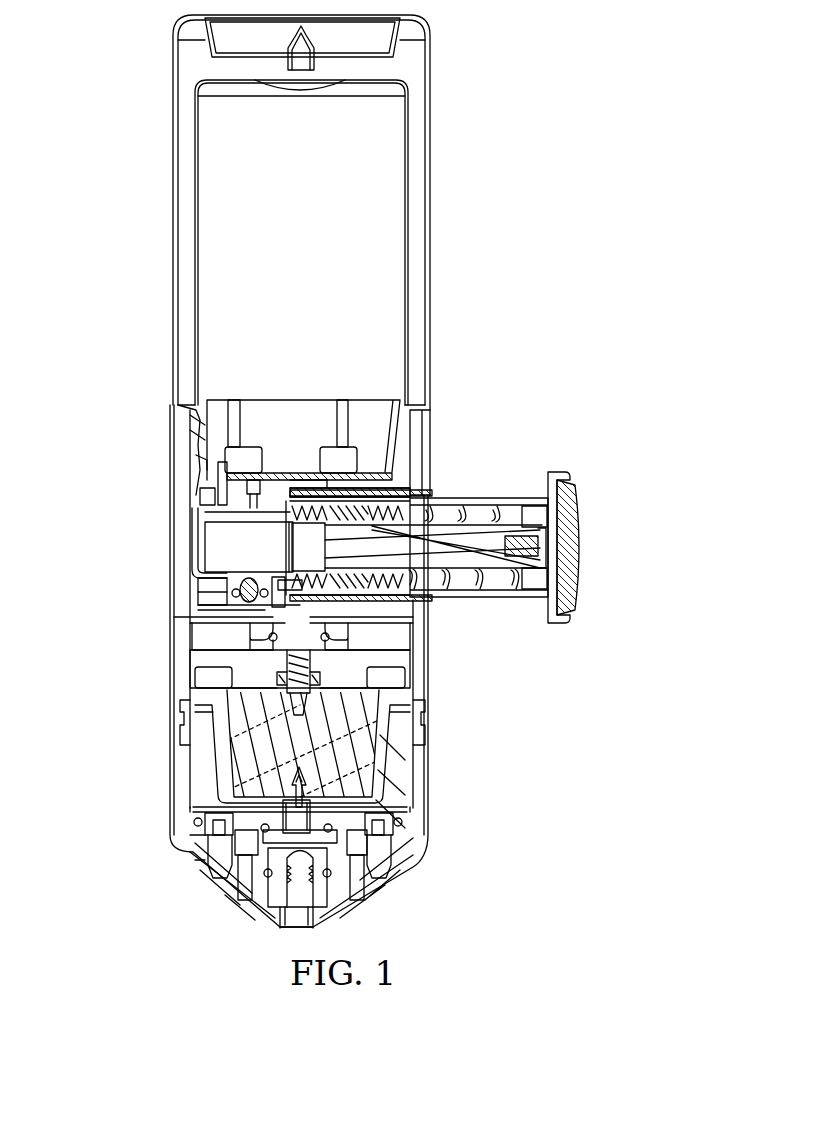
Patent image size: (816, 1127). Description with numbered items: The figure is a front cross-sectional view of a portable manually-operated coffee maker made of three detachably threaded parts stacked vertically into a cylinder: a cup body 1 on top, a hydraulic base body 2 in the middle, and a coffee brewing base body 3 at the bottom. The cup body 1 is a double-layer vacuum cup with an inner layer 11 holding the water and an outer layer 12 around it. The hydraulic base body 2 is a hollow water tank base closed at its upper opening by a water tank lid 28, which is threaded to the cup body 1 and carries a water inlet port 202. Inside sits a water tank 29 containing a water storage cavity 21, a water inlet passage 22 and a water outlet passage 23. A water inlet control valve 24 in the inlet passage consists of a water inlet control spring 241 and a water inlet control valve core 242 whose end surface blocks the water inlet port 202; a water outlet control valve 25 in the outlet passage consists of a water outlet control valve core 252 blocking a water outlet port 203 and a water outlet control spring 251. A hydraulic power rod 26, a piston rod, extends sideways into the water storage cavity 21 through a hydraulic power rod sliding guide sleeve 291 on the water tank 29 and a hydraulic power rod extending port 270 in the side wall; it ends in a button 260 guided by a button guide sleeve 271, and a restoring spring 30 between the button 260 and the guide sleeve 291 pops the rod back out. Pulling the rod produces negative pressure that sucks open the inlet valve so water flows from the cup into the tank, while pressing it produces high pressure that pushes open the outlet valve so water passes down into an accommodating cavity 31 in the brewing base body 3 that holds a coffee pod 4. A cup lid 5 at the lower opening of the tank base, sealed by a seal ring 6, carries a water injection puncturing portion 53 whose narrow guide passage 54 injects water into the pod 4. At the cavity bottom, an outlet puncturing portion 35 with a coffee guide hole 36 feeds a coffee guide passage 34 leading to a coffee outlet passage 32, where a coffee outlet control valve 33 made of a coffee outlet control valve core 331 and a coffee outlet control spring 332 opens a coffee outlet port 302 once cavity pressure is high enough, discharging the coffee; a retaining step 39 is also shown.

The cup body 1 is at (131, 274).
The hydraulic base body 2 is at (193, 490).
The coffee brewing base body 3 is at (177, 787).
The coffee pod 4 is at (405, 728).
The cup lid 5 is at (400, 656).
The seal ring 6 is at (222, 680).
The inner layer 11 is at (408, 232).
The outer layer 12 is at (432, 165).
The water storage cavity 21 is at (225, 548).
The water inlet passage 22 is at (228, 512).
The water outlet passage 23 is at (227, 607).
The water inlet control valve 24 is at (215, 522).
The water outlet control valve 25 is at (240, 620).
The hydraulic power rod 26 is at (510, 497).
The water tank lid 28 is at (175, 405).
The water tank 29 is at (205, 505).
The restoring spring 30 is at (541, 568).
The accommodating cavity 31 is at (400, 778).
The coffee outlet passage 32 is at (410, 875).
The coffee outlet control valve 33 is at (305, 918).
The coffee guide passage 34 is at (197, 822).
The outlet puncturing portion 35 is at (400, 813).
The coffee guide hole 36 is at (400, 796).
The retaining step 39 is at (217, 742).
The water injection puncturing portion 53 is at (405, 670).
The guide passage 54 is at (405, 695).
The water inlet port 202 is at (174, 432).
The water outlet port 203 is at (227, 555).
The water inlet control spring 241 is at (186, 472).
The water inlet control valve core 242 is at (180, 455).
The water outlet control spring 251 is at (240, 597).
The water outlet control valve core 252 is at (245, 585).
The button 260 is at (570, 481).
The hydraulic power rod extending port 270 is at (427, 498).
The button guide sleeve 271 is at (395, 460).
The hydraulic power rod sliding guide sleeve 291 is at (390, 480).
The coffee outlet port 302 is at (400, 838).
The coffee outlet control valve core 331 is at (243, 862).
The coffee outlet control spring 332 is at (217, 883).